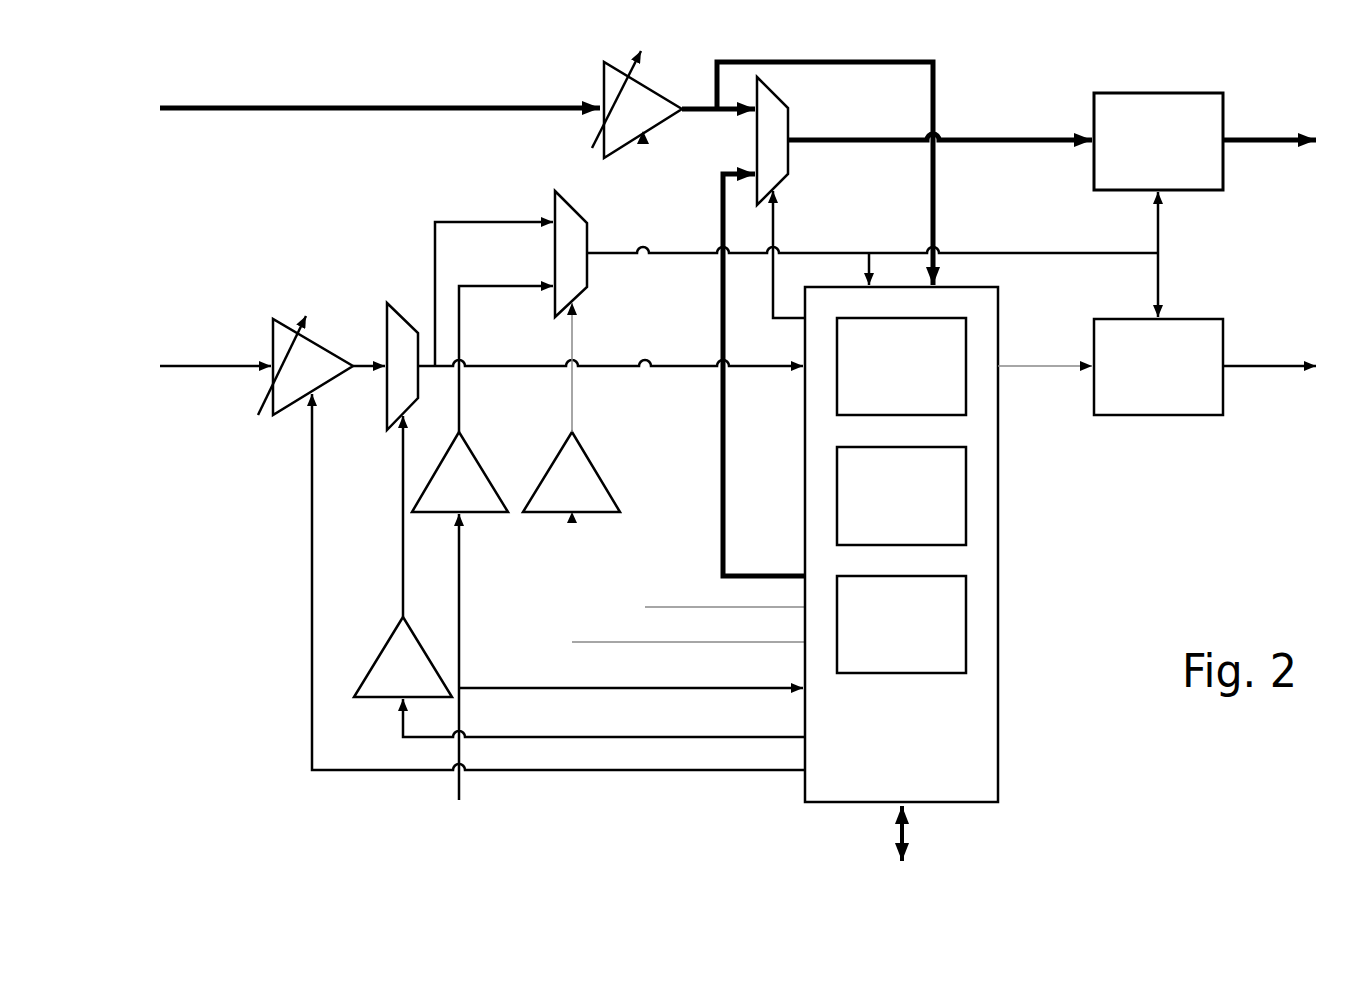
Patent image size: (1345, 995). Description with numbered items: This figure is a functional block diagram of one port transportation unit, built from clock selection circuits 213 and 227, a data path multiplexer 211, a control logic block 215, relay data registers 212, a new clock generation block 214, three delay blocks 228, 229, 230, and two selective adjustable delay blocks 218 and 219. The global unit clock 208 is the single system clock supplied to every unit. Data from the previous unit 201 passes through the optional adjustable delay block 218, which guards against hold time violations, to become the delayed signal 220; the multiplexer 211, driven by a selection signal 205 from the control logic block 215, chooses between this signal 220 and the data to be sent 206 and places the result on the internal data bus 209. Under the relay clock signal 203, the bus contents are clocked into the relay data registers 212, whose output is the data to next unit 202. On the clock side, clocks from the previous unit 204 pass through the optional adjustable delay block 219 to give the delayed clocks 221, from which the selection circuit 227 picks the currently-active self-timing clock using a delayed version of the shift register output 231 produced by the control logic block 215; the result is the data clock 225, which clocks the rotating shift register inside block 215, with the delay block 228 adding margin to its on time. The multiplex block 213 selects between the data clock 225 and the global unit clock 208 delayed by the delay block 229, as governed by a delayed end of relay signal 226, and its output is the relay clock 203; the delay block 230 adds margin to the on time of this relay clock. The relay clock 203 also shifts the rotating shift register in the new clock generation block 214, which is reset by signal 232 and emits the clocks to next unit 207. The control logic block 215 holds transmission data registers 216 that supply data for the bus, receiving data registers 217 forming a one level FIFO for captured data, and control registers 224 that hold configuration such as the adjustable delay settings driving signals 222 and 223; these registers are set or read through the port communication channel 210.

The data from previous unit 201 is at (380, 93).
The data to next unit 202 is at (1269, 188).
The relay clock signal 203 is at (872, 254).
The clocks from previous unit 204 is at (215, 412).
The selection signal 205 is at (839, 254).
The data to be sent 206 is at (764, 375).
The clocks to next unit 207 is at (1269, 412).
The global unit clock 208 is at (545, 704).
The internal data bus 209 is at (940, 125).
The port communication channel 210 is at (1052, 833).
The data path multiplexer 211 is at (772, 141).
The relay data registers 212 is at (1158, 141).
The clock selection circuit 213 is at (511, 311).
The new clock generation block 214 is at (1158, 367).
The control logic block 215 is at (901, 544).
The transmission data registers 216 is at (901, 366).
The receiving data registers 217 is at (901, 496).
The adjustable delay block 218 is at (673, 104).
The adjustable delay block 219 is at (321, 365).
The delayed version of data from previous unit 220 is at (825, 157).
The delayed version of clocks from previous unit 221 is at (372, 365).
The adjustable delay setting signal 222 is at (725, 592).
The adjustable delay setting signal 223 is at (558, 582).
The control registers 224 is at (901, 624).
The data clock 225 is at (610, 382).
The end of relay signal 226 is at (688, 627).
The self-timing clock selection circuit 227 is at (402, 366).
The delay block 228 is at (403, 556).
The delay block 229 is at (460, 472).
The delay block 230 is at (571, 413).
The shift register output signal 231 is at (604, 718).
The reset signal 232 is at (1045, 350).